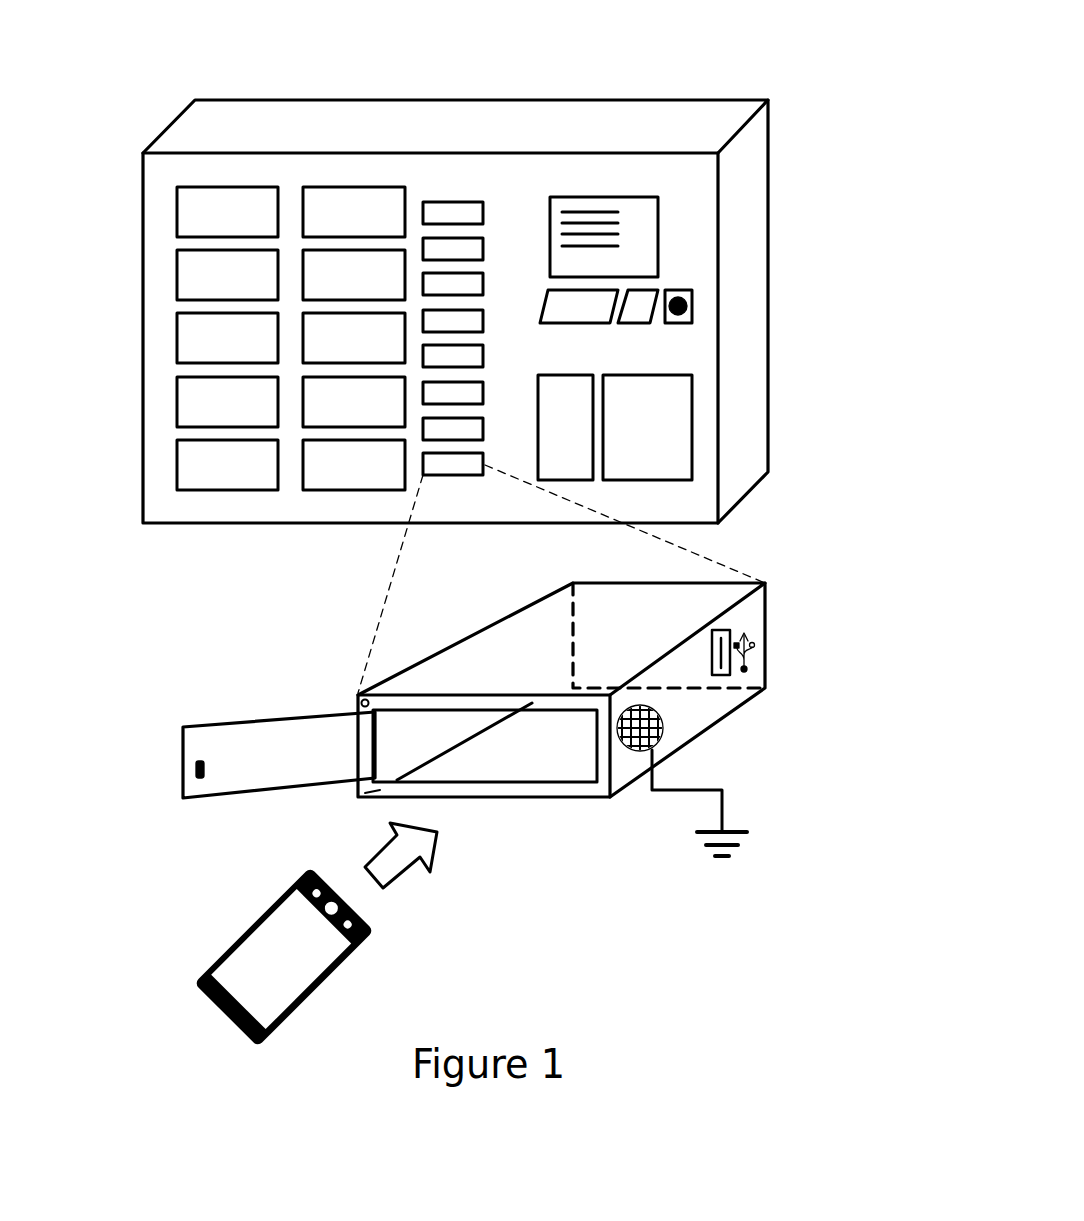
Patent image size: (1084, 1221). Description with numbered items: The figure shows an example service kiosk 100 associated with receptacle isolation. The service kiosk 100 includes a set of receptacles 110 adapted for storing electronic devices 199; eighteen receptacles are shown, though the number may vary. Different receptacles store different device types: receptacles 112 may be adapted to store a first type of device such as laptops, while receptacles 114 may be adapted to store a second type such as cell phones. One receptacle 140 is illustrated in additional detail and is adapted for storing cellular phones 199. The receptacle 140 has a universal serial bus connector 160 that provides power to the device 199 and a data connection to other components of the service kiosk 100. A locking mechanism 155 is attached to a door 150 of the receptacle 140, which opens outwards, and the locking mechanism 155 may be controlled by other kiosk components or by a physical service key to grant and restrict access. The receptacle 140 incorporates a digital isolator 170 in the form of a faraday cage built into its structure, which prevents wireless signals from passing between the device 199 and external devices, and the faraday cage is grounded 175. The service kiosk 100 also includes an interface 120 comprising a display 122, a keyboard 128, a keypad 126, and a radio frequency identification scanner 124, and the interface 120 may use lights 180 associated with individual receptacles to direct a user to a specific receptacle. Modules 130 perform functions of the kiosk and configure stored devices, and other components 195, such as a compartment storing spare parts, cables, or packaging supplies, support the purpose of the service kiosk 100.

The service kiosk 100 is at (572, 99).
The set of receptacles 110 is at (262, 250).
The receptacles 112 is at (402, 93).
The receptacles 114 is at (483, 93).
The interface 120 is at (752, 285).
The display 122 is at (658, 237).
The radio frequency identification (RFID) scanner 124 is at (692, 306).
The keypad 126 is at (638, 323).
The keyboard 128 is at (580, 323).
The modules 130 is at (568, 480).
The receptacle 140 is at (548, 800).
The door 150 is at (280, 715).
The locking mechanism 155 is at (190, 773).
The universal serial bus (USB) connector 160 is at (722, 630).
The digital isolator 170 is at (665, 733).
The ground 175 is at (725, 803).
The lights 180 is at (357, 707).
The other components 195 is at (692, 428).
The electronic device 199 is at (377, 935).